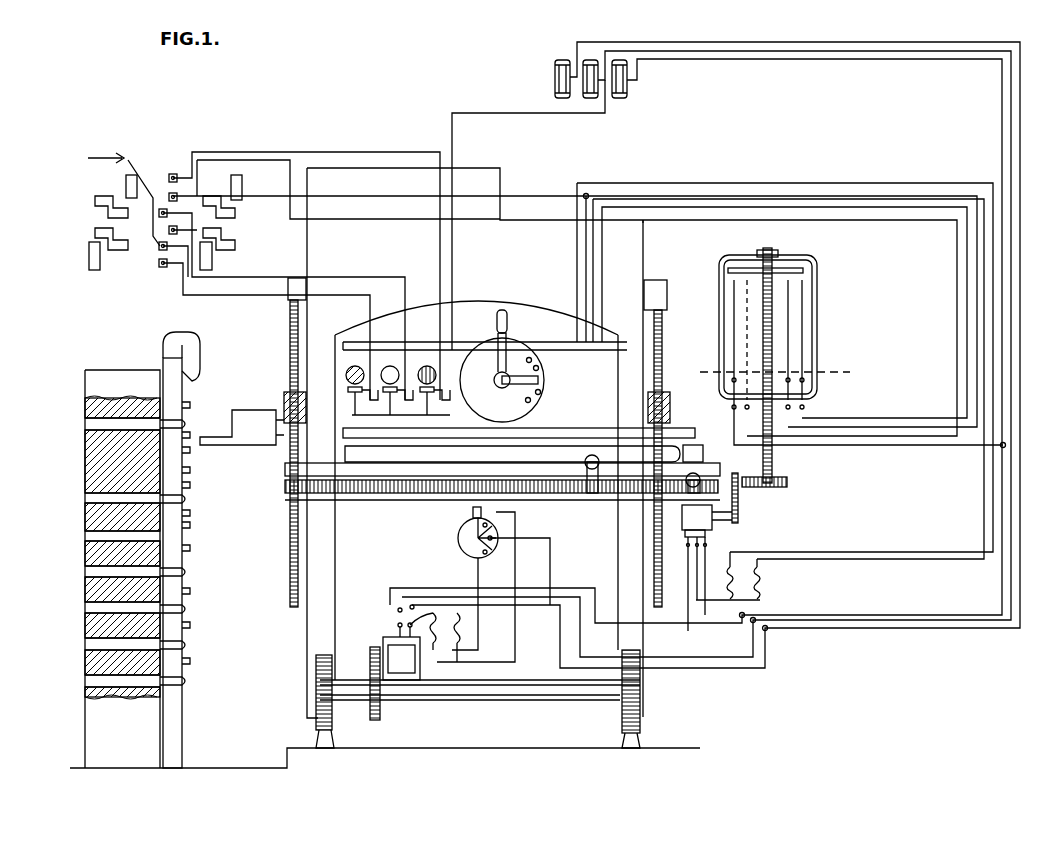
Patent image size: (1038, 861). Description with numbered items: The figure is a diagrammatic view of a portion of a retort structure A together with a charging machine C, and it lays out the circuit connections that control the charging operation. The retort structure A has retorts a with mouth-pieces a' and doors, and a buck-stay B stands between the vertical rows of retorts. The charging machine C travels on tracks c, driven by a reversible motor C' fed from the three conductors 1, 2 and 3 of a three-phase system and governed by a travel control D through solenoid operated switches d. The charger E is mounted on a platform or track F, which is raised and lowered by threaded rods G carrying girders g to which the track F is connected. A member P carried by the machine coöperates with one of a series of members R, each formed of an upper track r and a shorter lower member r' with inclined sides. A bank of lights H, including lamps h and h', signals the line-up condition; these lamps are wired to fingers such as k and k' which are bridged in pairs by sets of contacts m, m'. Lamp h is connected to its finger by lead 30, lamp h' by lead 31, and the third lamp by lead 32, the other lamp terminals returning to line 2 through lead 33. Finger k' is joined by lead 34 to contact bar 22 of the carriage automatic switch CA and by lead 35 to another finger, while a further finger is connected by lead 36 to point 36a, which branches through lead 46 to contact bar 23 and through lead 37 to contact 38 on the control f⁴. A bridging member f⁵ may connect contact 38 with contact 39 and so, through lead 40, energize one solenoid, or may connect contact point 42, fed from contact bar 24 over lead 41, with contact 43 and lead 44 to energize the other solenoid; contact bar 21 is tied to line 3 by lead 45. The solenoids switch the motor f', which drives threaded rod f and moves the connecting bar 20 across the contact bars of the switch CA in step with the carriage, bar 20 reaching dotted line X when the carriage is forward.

The conductor 1 is at (559, 60).
The conductor 2 is at (594, 60).
The conductor 3 is at (624, 60).
The connecting bar 20 is at (805, 268).
The contact bar 21 is at (732, 298).
The contact bar 22 is at (742, 268).
The contact bar 23 is at (790, 300).
The contact bar 24 is at (804, 352).
The carriage automatic switch CA is at (815, 327).
The dotted line x—x X is at (775, 373).
The lead 30 is at (262, 296).
The lead 31 is at (337, 277).
The lead 32 is at (342, 152).
The lead 33 is at (453, 262).
The lead 34 is at (406, 220).
The lead 35 is at (128, 160).
The lead 36 is at (533, 195).
The branch point 36a is at (590, 193).
The lead 37 is at (575, 260).
The contact 38 is at (538, 370).
The contact 39 is at (530, 357).
The lead 40 is at (793, 197).
The lead 41 is at (915, 210).
The contact point 42 is at (529, 403).
The contact 43 is at (541, 392).
The lead 44 is at (708, 183).
The lead 45 is at (856, 445).
The lead 46 is at (882, 192).
The retort structure A is at (85, 518).
The retort a is at (102, 554).
The mouth-piece a' is at (166, 557).
The buck-stay B is at (184, 568).
The track r is at (194, 445).
The lower member r' is at (201, 503).
The member R is at (192, 516).
The member P is at (240, 410).
The charging machine C is at (475, 443).
The motor C' is at (395, 663).
The track c is at (333, 741).
The threaded rod G is at (290, 340).
The girder g is at (284, 396).
The charger E is at (563, 448).
The platform or track F is at (570, 496).
The threaded rod f is at (686, 389).
The motor f' is at (721, 536).
The travel control D is at (458, 538).
The solenoid operated switches d is at (450, 622).
The bank of lights H is at (401, 380).
The lamp h is at (345, 390).
The lamp h' is at (402, 365).
The finger k is at (170, 158).
The finger k' is at (162, 185).
The contact m is at (177, 187).
The contact m' is at (154, 209).